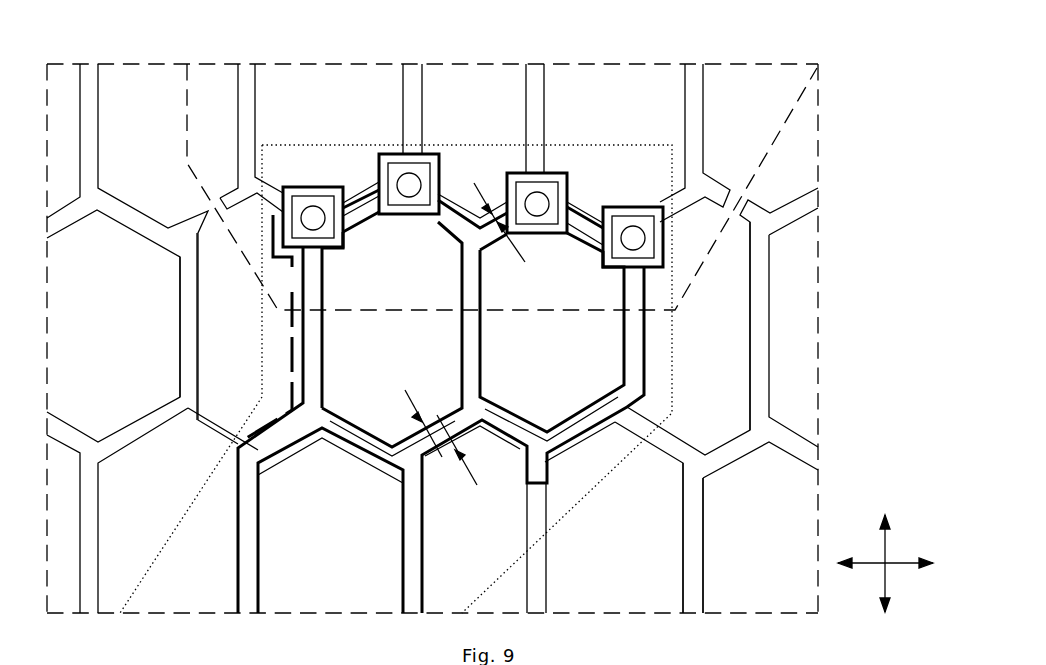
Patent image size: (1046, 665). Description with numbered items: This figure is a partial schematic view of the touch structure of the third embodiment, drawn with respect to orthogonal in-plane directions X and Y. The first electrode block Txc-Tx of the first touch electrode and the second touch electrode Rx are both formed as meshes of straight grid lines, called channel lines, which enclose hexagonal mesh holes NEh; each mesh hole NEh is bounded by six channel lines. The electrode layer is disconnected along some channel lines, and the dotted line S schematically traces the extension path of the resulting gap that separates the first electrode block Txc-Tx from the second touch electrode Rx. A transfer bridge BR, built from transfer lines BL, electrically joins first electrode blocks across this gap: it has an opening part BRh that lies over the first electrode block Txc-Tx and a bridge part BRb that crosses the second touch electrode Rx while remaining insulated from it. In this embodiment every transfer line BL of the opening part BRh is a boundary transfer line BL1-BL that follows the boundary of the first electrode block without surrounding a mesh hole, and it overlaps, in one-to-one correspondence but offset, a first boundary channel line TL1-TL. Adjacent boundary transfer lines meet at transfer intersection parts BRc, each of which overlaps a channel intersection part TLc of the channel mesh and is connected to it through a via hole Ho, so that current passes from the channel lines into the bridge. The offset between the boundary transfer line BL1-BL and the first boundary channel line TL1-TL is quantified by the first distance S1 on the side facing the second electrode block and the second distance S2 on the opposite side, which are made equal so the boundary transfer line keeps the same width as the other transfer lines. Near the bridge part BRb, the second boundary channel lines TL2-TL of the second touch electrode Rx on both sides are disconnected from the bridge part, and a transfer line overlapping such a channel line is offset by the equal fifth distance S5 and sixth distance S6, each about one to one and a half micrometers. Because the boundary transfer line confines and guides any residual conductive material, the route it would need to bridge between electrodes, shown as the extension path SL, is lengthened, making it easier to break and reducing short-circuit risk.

The mesh hole NEh is at (625, 85).
The opening part BRh is at (360, 148).
The first boundary channel line TL1-TL is at (340, 178).
The transfer intersection part BRc is at (522, 175).
The channel intersection part TLc is at (556, 180).
The first electrode block of the first touch electrode Txc-Tx is at (742, 103).
The dotted line S is at (793, 108).
The second touch electrode Rx is at (793, 330).
The second boundary channel line TL2-TL is at (185, 325).
The extension path SL is at (290, 352).
The bridge part BRb is at (612, 462).
The transfer bridge BR is at (905, 306).
The via hole Ho is at (540, 208).
The boundary transfer line BL1-BL is at (367, 222).
The transfer line BL is at (474, 345).
The first distance S1 is at (519, 250).
The second distance S2 is at (488, 194).
The fifth distance S5 is at (423, 420).
The sixth distance S6 is at (465, 450).
The X axis direction X is at (895, 554).
The Y axis direction Y is at (883, 550).